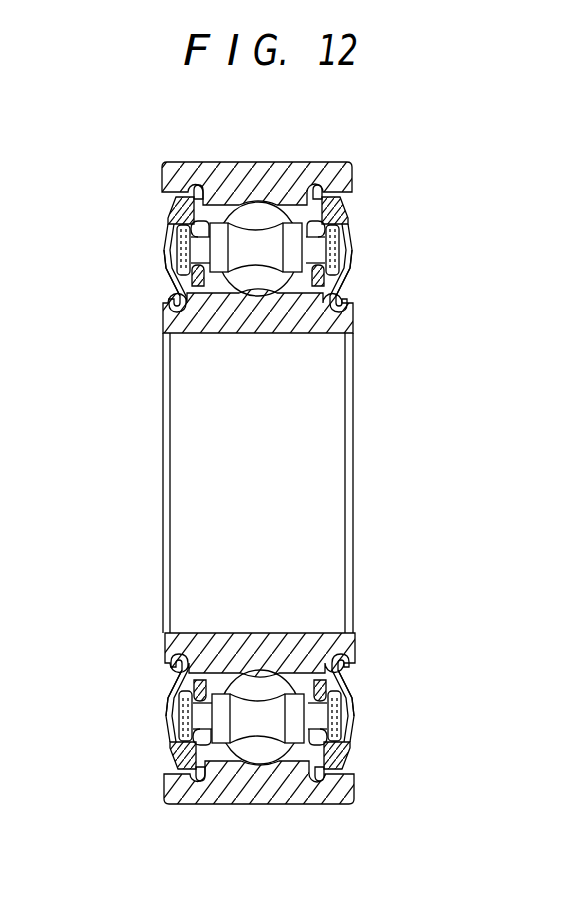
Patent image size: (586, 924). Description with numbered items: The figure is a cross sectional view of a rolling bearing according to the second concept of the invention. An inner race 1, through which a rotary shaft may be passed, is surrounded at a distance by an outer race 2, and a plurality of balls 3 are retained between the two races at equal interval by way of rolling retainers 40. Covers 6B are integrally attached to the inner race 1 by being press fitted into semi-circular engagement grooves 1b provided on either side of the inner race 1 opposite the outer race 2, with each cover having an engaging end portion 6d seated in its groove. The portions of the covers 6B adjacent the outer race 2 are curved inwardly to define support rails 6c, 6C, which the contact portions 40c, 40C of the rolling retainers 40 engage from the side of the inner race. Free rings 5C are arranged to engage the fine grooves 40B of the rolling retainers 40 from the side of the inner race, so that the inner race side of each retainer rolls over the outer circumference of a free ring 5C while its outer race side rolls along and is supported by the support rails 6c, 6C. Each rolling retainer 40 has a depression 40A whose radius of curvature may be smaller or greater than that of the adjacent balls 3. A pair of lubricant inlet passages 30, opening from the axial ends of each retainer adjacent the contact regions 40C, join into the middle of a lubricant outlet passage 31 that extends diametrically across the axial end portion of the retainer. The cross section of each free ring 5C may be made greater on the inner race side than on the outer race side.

The inner race 1 is at (160, 335).
The semi-circular engagement grooves 1b is at (189, 337).
The outer race 2 is at (316, 163).
The balls 3 is at (258, 207).
The free rings 5C is at (165, 307).
The covers 6B is at (165, 273).
The support rails 6c is at (167, 215).
The support rails 6C is at (187, 767).
The inner engaging hook of seal 6d is at (165, 323).
The lubricant inlet passages 30 is at (170, 252).
The lubricant outlet passage 31 is at (165, 220).
The rolling retainers 40 is at (163, 262).
The depression 40A is at (205, 250).
The fine grooves 40B is at (202, 232).
The contact portions 40c is at (163, 235).
The contact portions 40C is at (180, 710).